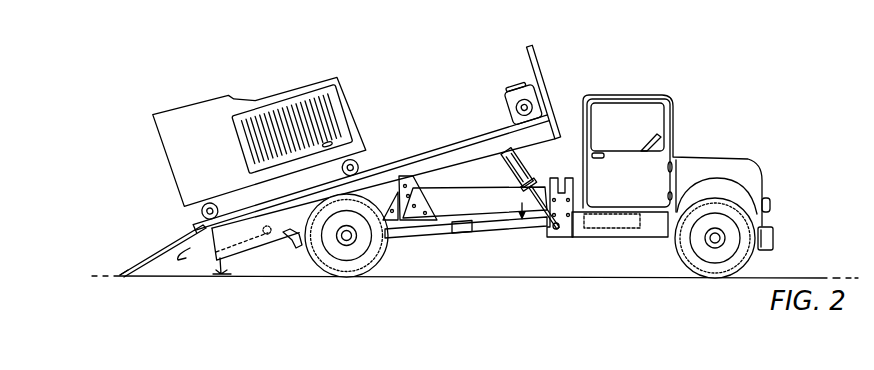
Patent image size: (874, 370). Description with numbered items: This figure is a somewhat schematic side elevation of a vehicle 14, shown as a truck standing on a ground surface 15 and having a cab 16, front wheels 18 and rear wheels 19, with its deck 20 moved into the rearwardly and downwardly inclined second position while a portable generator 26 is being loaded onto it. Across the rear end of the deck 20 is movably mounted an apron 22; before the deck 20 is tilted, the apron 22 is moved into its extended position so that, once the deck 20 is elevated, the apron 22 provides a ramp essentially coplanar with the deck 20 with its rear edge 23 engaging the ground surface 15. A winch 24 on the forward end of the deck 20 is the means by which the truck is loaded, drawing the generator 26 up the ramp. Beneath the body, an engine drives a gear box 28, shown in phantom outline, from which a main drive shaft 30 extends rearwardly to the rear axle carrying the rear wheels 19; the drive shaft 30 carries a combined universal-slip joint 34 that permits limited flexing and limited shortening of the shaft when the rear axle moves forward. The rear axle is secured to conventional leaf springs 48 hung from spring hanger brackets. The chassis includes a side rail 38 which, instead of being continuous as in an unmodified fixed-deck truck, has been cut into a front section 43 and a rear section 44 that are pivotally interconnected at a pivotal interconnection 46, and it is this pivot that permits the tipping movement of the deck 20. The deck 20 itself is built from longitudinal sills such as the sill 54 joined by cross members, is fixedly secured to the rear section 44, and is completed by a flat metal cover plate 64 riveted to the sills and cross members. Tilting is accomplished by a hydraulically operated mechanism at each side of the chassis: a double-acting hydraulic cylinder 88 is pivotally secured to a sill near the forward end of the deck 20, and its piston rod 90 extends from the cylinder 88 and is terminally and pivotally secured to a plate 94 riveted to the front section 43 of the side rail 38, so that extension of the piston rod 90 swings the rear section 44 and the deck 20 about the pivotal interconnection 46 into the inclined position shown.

The vehicle 14 is at (620, 71).
The ground surface 15 is at (783, 278).
The cab 16 is at (676, 125).
The front wheels 18 is at (717, 269).
The rear wheels 19 is at (357, 267).
The deck 20 is at (440, 148).
The apron 22 is at (152, 244).
The rear edge 23 is at (123, 275).
The winch 24 is at (508, 98).
The generator 26 is at (231, 99).
The gear box 28 is at (620, 222).
The main drive shaft 30 is at (413, 234).
The combined universal-slip joint 34 is at (464, 232).
The side rail 38 is at (522, 224).
The front section 43 is at (493, 201).
The rear section 44 is at (271, 244).
The pivotal interconnection 46 is at (403, 161).
The leaf springs 48 is at (295, 252).
The sill 54 is at (433, 172).
The cover plate 64 is at (463, 140).
The double-acting hydraulic cylinder 88 is at (521, 163).
The piston rod 90 is at (534, 222).
The plate 94 is at (574, 204).